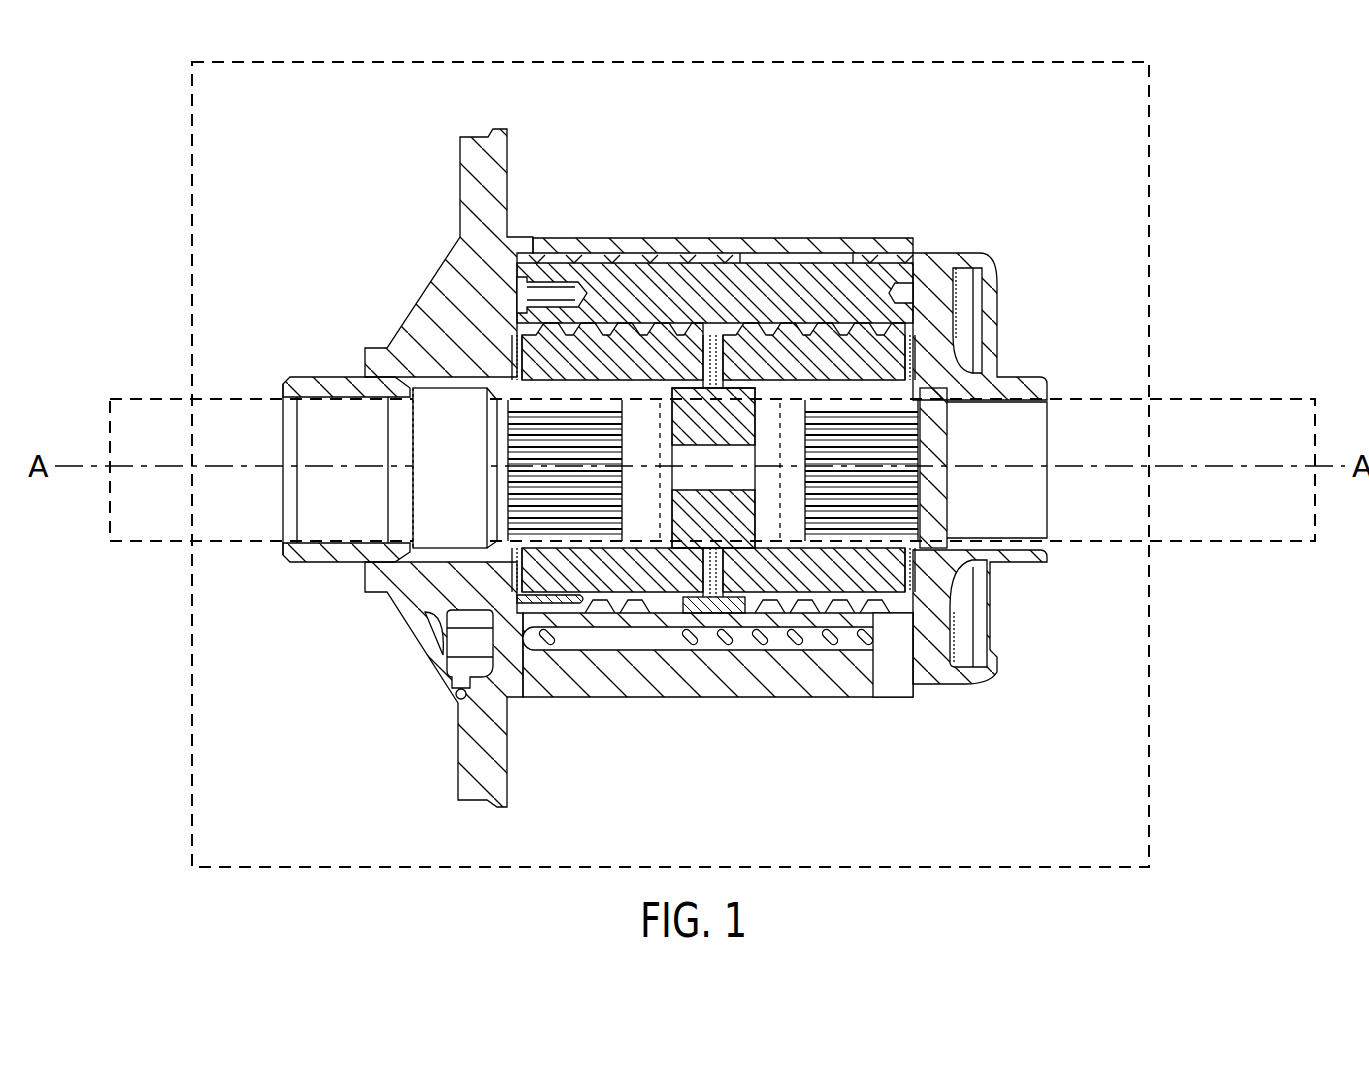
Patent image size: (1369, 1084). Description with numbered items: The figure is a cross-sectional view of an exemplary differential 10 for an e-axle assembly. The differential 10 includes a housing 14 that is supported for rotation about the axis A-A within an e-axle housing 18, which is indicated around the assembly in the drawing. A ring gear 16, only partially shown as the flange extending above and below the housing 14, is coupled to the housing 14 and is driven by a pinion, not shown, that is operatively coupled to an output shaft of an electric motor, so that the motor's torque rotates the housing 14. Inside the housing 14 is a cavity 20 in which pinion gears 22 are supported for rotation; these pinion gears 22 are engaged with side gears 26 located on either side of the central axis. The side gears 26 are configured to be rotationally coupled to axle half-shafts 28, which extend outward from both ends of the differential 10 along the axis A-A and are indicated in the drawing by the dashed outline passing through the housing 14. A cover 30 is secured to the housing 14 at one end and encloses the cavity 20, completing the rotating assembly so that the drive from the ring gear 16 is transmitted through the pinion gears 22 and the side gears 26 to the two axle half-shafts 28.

The differential 10 is at (878, 206).
The housing 14 is at (706, 229).
The ring gear 16 is at (471, 161).
The e-axle housing 18 is at (183, 699).
The cavity 20 is at (753, 246).
The pinion gears 22 is at (667, 258).
The side gears 26 is at (571, 382).
The axle half-shafts 28 is at (238, 431).
The cover 30 is at (940, 276).